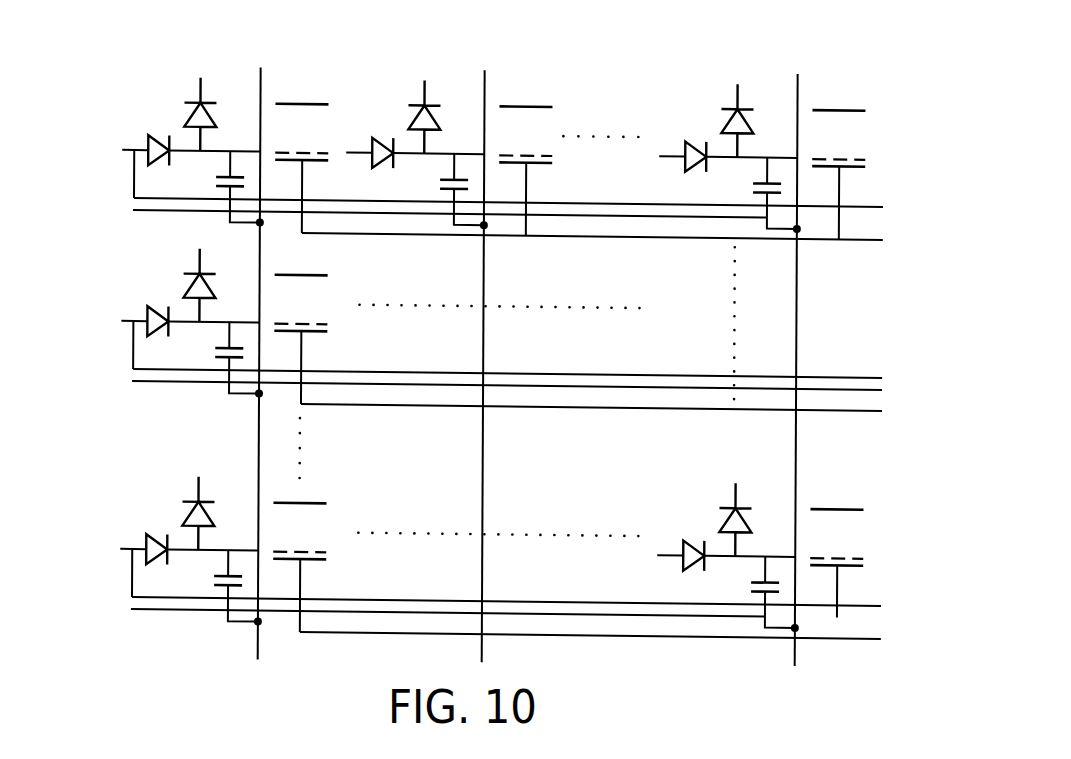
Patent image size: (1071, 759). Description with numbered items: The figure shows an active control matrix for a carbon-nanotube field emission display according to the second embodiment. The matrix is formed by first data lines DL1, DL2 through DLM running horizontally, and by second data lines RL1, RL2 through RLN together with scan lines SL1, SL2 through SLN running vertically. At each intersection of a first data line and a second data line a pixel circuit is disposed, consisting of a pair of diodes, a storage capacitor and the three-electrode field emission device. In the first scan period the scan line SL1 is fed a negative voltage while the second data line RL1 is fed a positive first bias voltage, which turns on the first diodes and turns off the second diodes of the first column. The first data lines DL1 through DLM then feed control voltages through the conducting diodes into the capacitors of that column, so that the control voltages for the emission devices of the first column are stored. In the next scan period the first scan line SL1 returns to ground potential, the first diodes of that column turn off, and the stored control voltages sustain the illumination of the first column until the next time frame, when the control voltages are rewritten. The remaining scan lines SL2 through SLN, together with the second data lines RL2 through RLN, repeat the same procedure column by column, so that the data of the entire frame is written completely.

The second data line RL1 is at (200, 95).
The second data line RL2 is at (426, 96).
The second data line RLN is at (739, 100).
The scan line SL1 is at (259, 344).
The scan line SL2 is at (486, 345).
The scan line SLN is at (800, 351).
The first data line DL1 is at (156, 165).
The first data line DL2 is at (155, 337).
The first data line DLM is at (154, 564).